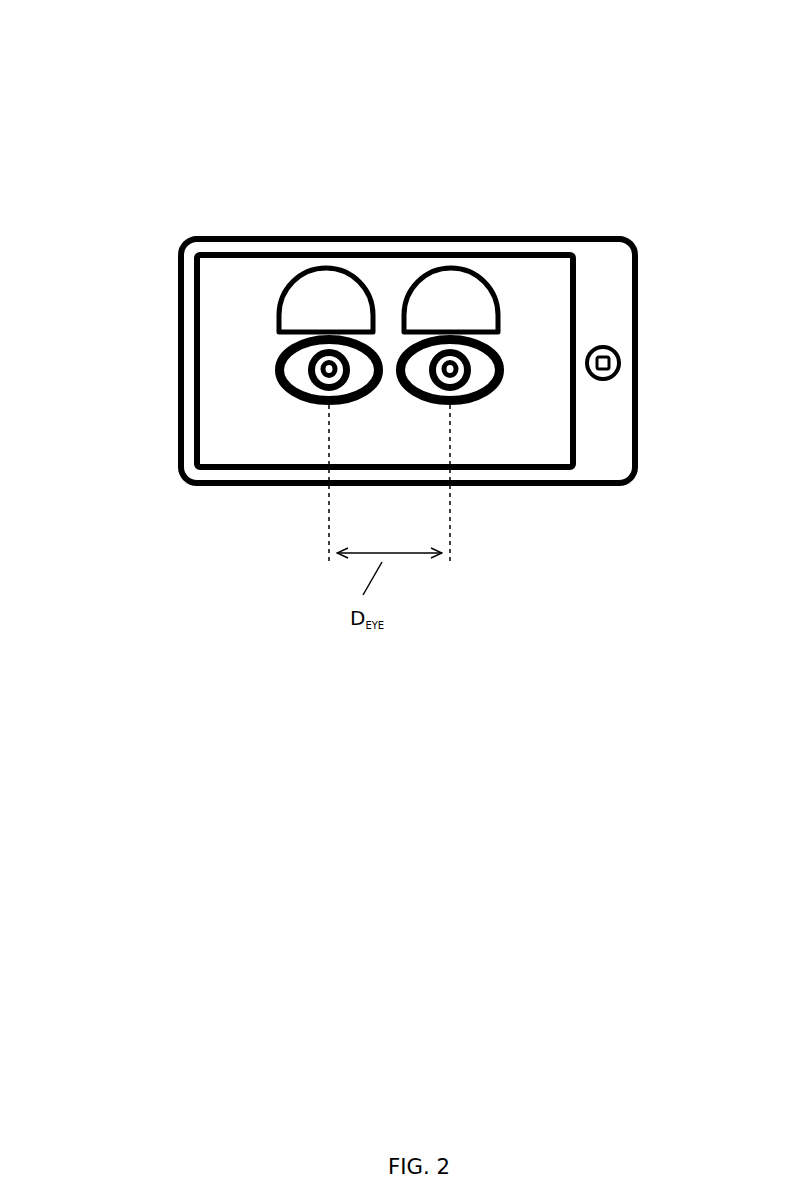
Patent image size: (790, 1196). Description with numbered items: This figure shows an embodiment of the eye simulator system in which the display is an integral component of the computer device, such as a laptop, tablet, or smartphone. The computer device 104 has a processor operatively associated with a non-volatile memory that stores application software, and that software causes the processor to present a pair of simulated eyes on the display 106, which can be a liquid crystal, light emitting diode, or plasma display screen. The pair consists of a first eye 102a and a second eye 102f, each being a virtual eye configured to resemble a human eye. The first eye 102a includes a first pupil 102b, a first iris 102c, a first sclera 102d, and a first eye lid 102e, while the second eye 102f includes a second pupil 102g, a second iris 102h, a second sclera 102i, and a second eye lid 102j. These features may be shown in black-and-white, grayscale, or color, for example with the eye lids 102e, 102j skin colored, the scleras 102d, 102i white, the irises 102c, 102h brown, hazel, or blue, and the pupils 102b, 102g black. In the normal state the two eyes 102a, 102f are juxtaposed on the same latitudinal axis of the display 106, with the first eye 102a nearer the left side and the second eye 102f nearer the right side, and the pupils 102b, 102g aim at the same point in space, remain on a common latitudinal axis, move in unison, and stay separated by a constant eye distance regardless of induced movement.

The first eye 102a is at (260, 289).
The first pupil 102b is at (300, 402).
The first iris 102c is at (340, 330).
The first sclera 102d is at (262, 289).
The first eye lid 102e is at (322, 290).
The second eye 102f is at (533, 272).
The second pupil 102g is at (480, 395).
The second iris 102h is at (533, 272).
The second sclera 102i is at (488, 327).
The second eye lid 102j is at (453, 290).
The computer device 104 is at (177, 392).
The display 106 is at (208, 448).